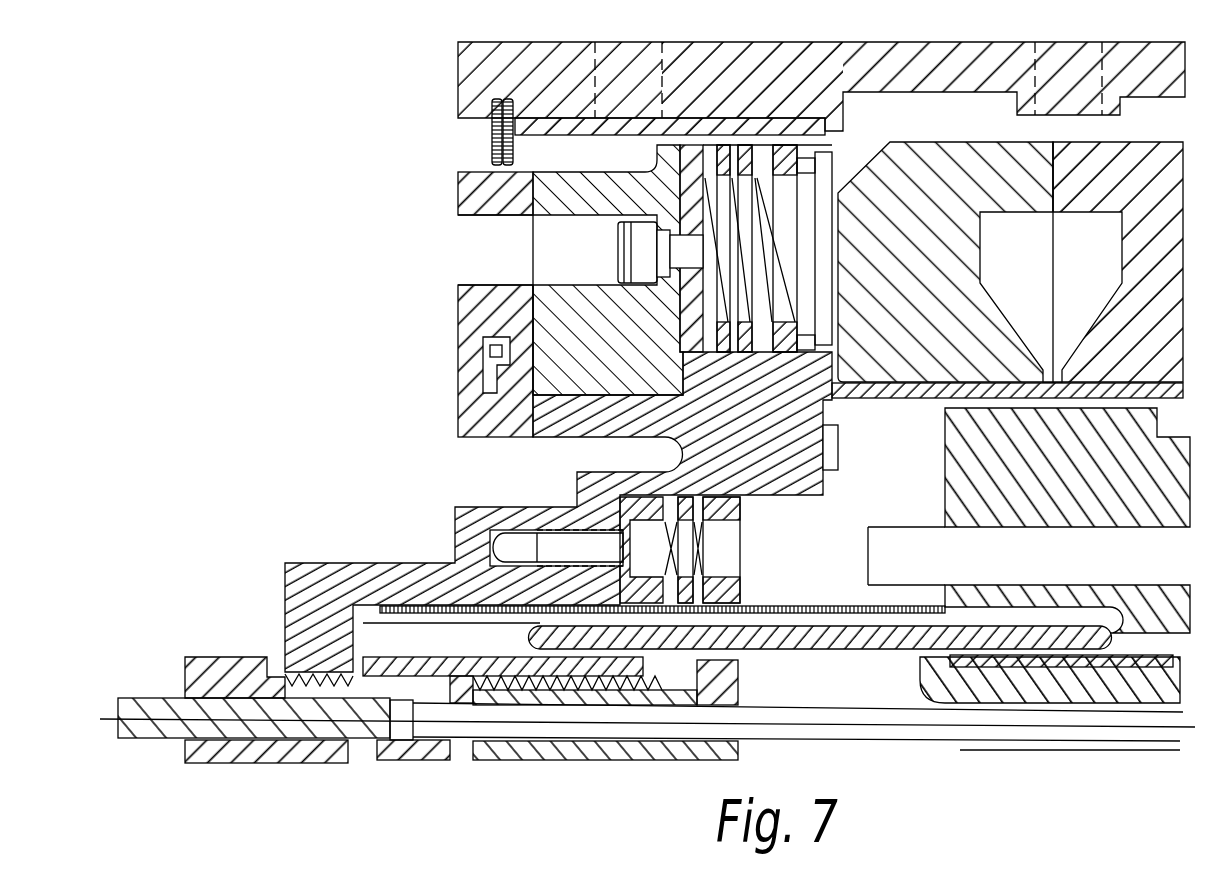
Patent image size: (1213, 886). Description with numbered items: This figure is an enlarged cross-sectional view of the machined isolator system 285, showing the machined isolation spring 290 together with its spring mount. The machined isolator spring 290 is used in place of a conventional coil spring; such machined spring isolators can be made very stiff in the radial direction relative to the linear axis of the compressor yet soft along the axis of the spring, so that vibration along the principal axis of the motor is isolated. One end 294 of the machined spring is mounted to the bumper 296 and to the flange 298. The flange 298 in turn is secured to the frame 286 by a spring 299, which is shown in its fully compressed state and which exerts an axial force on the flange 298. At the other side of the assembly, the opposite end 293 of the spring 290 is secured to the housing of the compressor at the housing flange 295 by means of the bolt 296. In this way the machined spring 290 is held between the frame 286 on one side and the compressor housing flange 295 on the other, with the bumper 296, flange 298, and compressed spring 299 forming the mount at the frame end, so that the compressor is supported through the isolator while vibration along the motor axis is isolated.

The positioning assembly 285 is at (406, 358).
The frame 286 is at (623, 41).
The machined isolation spring 290 is at (717, 221).
The opposite end of the spring 293 is at (682, 355).
The end of the machined spring 294 is at (803, 192).
The housing flange 295 is at (550, 310).
The bumper 296 is at (838, 164).
The flange 298 is at (692, 120).
The spring 299 is at (491, 144).